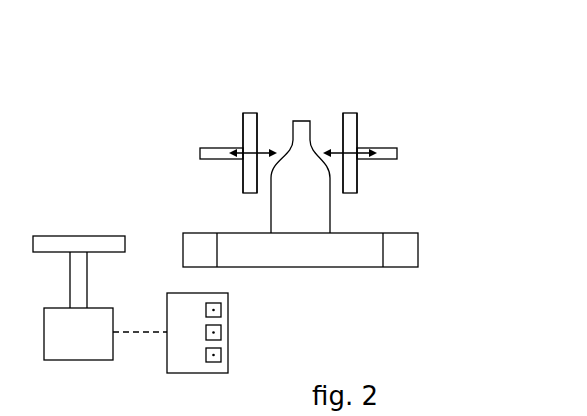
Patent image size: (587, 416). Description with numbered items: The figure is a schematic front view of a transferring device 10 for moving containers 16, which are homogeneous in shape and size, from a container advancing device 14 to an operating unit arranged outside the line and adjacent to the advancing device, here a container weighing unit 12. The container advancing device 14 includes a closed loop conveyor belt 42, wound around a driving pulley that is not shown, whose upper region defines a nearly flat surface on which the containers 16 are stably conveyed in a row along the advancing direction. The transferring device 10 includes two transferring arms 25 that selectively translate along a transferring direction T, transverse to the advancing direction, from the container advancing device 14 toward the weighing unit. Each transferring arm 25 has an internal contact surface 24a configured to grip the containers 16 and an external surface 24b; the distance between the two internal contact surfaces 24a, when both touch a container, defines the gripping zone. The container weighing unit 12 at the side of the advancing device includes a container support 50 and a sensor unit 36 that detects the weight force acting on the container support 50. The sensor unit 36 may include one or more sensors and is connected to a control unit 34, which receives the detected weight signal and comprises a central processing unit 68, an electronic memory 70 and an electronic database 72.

The transferring device 10 is at (394, 38).
The container weighing unit 12 is at (50, 281).
The container advancing device 14 is at (352, 221).
The container 16 is at (301, 220).
The internal contact surface 24a is at (261, 124).
The external surface 24b is at (238, 132).
The transferring arm 25 is at (248, 108).
The control unit 34 is at (188, 357).
The sensor unit 36 is at (78, 338).
The conveyor belt 42 is at (347, 252).
The container support 50 is at (74, 244).
The central processing unit 68 is at (222, 307).
The electronic memory 70 is at (221, 333).
The electronic database 72 is at (222, 356).
The transferring direction T is at (243, 163).